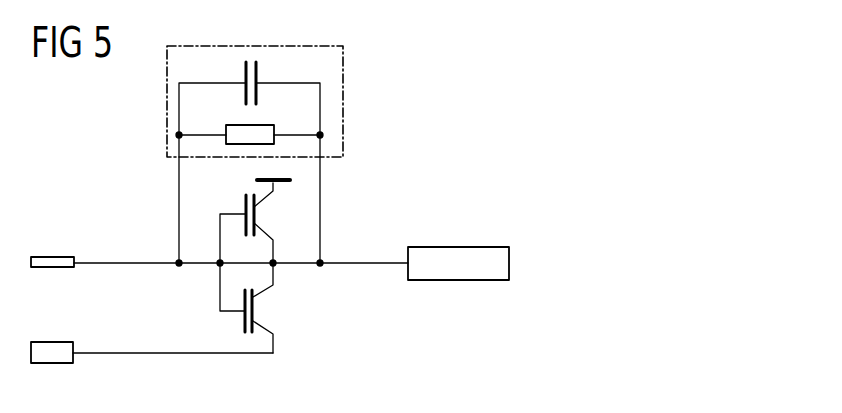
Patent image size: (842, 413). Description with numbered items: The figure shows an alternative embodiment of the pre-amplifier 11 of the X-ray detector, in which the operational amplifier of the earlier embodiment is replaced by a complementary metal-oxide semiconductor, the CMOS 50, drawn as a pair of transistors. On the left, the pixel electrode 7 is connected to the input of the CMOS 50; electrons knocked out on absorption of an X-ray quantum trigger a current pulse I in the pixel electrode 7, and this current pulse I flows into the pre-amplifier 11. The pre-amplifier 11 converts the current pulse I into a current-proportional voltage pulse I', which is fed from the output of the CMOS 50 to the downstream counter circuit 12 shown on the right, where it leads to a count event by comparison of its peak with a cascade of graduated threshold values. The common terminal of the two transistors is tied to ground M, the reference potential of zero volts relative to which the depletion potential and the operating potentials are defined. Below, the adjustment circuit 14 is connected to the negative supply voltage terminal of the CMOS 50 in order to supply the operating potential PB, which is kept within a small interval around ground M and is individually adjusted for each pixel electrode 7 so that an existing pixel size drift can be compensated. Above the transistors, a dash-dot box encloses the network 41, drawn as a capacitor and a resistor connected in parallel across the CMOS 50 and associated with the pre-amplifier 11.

The pixel electrode 7 is at (52, 257).
The pre-amplifier 11 is at (454, 97).
The counter circuit 12 is at (463, 247).
The adjustment circuit 14 is at (52, 342).
The snubber network (capacitor and resistor) 41 is at (343, 94).
The CMOS 50 is at (313, 297).
The ground M is at (274, 179).
The current pulse I is at (109, 227).
The voltage pulse I' is at (385, 228).
The operating potential PB is at (118, 353).